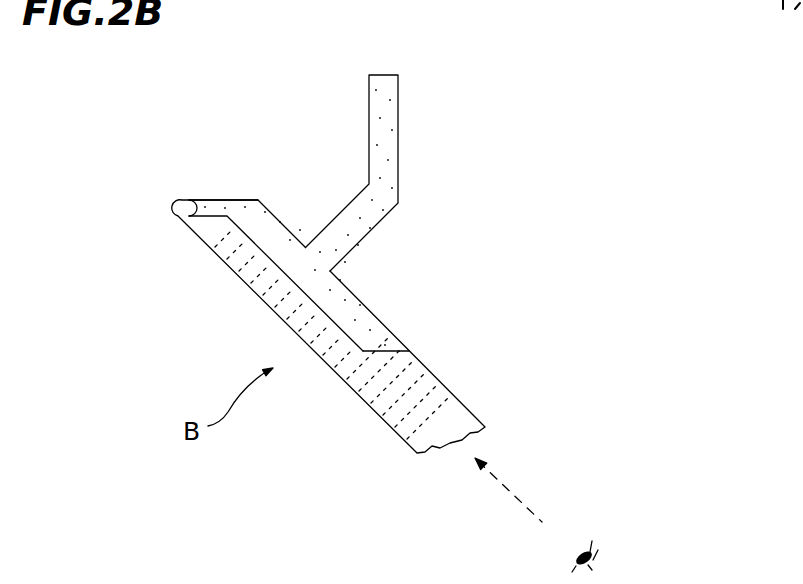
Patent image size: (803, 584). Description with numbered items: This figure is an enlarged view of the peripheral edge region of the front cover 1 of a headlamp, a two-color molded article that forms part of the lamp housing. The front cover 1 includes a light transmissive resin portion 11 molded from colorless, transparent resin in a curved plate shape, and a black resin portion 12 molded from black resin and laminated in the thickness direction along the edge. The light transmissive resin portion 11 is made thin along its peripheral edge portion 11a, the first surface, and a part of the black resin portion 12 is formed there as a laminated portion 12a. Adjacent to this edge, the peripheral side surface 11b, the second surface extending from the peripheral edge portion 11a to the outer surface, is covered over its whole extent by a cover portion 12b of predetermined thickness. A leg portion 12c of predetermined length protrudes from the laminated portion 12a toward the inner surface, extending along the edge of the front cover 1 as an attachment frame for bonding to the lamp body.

The front cover 1 is at (470, 394).
The light transmissive resin portion 11 is at (317, 310).
The peripheral edge portion 11a is at (285, 270).
The peripheral side surface 11b is at (197, 211).
The black resin portion 12 is at (327, 208).
The laminated portion 12a is at (352, 314).
The cover portion 12b is at (218, 207).
The leg portion 12c is at (385, 177).